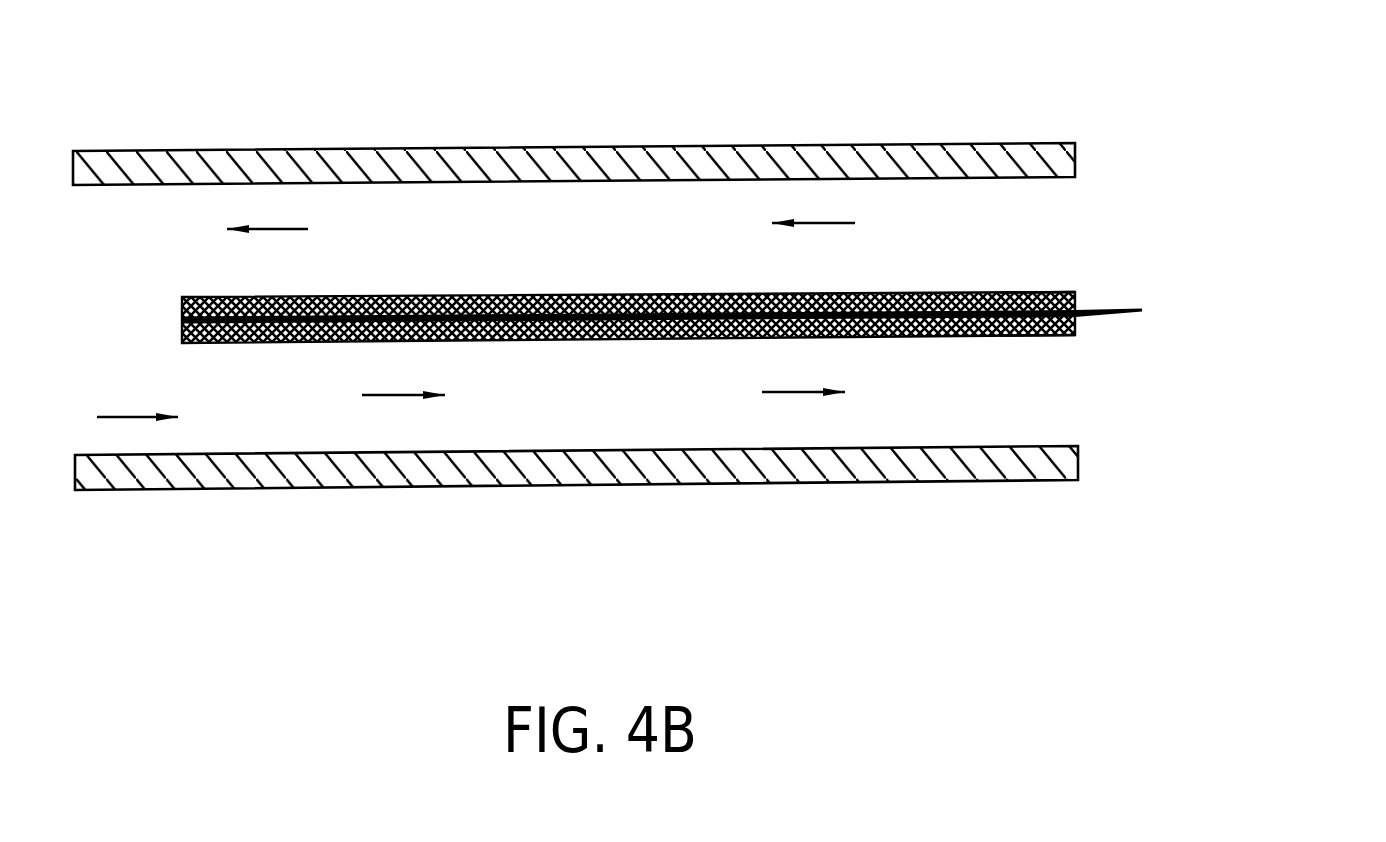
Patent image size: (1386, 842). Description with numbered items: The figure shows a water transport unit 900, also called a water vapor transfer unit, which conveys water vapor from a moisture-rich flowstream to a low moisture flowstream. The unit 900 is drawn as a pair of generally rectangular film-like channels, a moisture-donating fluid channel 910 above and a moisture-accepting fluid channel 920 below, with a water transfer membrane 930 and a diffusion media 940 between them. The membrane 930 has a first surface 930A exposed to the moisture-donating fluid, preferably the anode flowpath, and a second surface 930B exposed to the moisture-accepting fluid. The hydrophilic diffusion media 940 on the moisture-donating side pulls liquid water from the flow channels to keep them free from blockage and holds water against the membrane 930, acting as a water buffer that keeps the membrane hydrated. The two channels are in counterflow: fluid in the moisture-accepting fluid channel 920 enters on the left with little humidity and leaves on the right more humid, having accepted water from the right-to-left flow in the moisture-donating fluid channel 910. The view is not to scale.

The water transport unit 900 is at (546, 44).
The moisture-donating fluid channel 910 is at (645, 202).
The moisture-accepting fluid channel 920 is at (657, 430).
The water transfer membrane 930 is at (1150, 308).
The first surface 930A is at (1088, 288).
The second surface 930B is at (1088, 337).
The diffusion media 940 is at (461, 299).